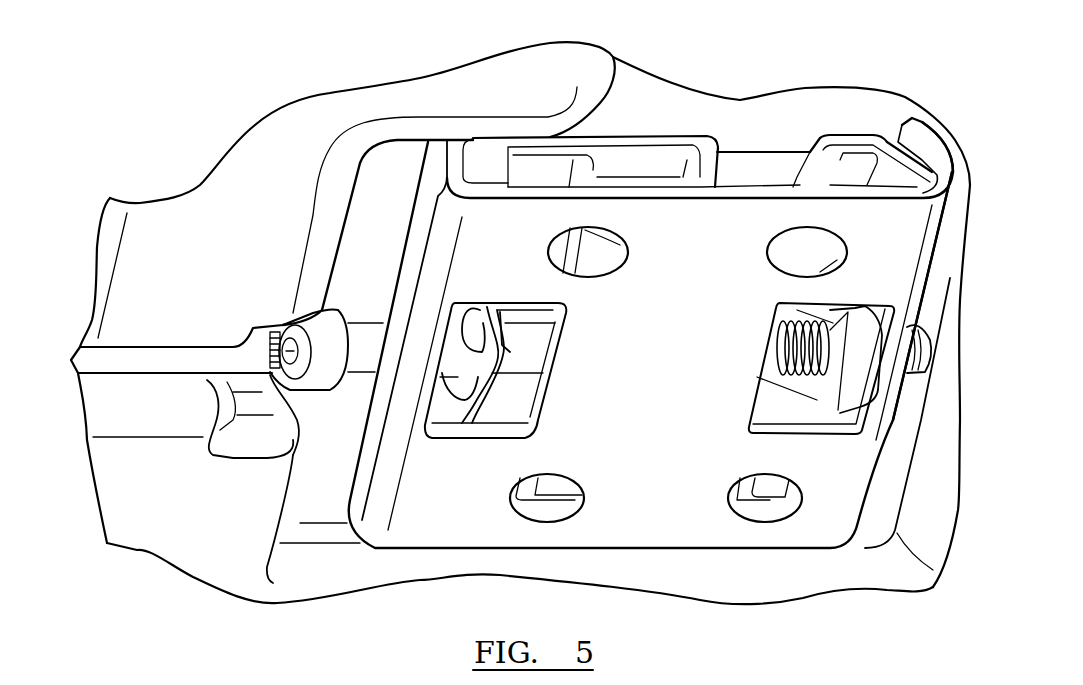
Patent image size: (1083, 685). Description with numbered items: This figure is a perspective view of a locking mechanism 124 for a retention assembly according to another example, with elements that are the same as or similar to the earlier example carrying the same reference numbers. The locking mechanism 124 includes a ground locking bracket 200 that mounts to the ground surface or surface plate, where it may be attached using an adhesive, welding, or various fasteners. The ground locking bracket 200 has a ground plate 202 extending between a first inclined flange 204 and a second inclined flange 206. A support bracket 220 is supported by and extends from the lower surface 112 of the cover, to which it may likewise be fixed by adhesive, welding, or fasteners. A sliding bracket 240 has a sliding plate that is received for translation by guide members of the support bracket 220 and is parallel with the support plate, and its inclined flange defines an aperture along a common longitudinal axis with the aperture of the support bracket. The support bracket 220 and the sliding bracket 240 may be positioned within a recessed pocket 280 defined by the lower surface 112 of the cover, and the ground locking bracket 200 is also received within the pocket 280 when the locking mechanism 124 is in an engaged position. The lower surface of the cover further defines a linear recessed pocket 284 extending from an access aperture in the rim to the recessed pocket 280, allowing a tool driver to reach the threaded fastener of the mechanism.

The lower surface of the cover 112 is at (781, 585).
The locking mechanism 124 is at (703, 120).
The ground locking bracket 200 is at (651, 387).
The ground plate 202 is at (662, 498).
The first inclined flange 204 is at (455, 161).
The second inclined flange 206 is at (937, 135).
The support bracket 220 is at (645, 138).
The sliding bracket 240 is at (847, 133).
The recessed pocket 280 is at (317, 480).
The linear recessed pocket 284 is at (165, 403).